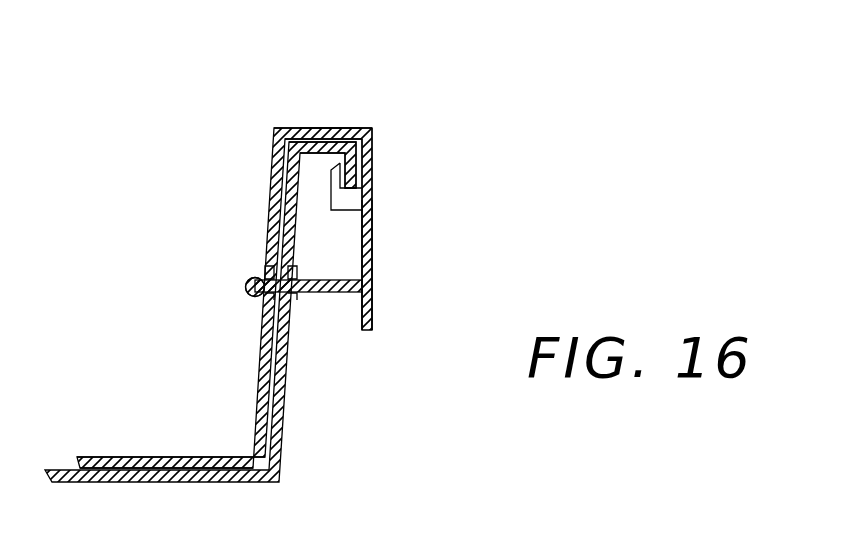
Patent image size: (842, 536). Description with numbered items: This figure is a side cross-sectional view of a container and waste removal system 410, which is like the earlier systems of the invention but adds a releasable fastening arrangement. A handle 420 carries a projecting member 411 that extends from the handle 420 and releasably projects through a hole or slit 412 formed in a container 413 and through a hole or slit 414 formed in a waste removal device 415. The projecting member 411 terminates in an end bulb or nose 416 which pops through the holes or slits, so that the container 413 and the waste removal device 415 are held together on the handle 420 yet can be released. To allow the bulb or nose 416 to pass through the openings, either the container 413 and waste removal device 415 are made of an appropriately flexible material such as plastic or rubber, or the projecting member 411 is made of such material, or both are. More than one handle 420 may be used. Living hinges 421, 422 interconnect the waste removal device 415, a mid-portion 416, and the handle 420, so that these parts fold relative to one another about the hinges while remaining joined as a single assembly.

The system 410 is at (246, 370).
The projecting member 411 is at (339, 293).
The hole or slit 412 is at (290, 278).
The container 413 is at (283, 443).
The hole or slit 414 is at (268, 268).
The waste removal device 415 is at (148, 456).
The end bulb or nose 416 is at (328, 128).
The handle 420 is at (372, 222).
The living hinge 421 is at (278, 130).
The living hinge 422 is at (370, 132).